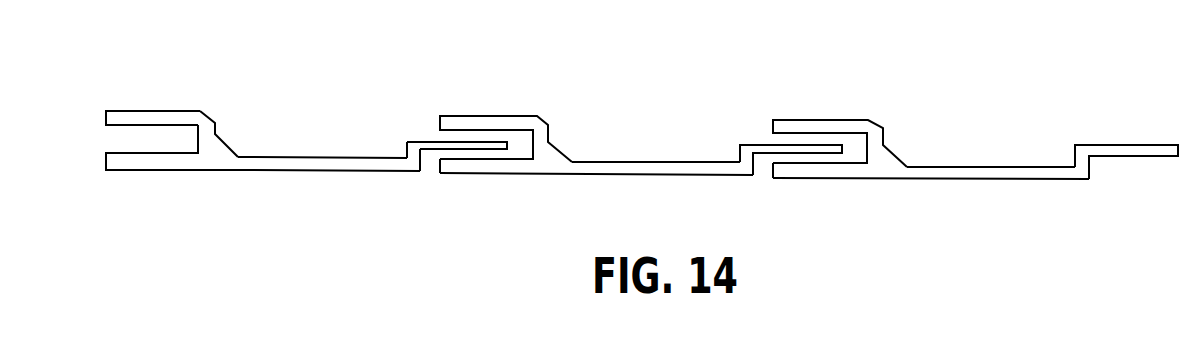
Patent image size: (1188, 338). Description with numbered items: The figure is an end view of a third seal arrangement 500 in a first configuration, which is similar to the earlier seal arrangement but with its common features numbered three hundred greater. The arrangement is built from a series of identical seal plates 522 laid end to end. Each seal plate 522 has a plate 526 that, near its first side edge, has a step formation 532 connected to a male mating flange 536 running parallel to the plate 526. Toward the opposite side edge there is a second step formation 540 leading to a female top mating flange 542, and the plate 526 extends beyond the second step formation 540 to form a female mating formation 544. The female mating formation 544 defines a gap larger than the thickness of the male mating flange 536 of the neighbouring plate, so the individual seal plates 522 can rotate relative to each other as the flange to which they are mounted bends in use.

The seal arrangement 500 is at (642, 132).
The seal plate 522 is at (298, 172).
The plate 526 is at (361, 165).
The step formation 532 is at (405, 170).
The male mating flange 536 is at (485, 148).
The second step formation 540 is at (222, 145).
The female top mating flange 542 is at (147, 112).
The female mating formation 544 is at (131, 162).